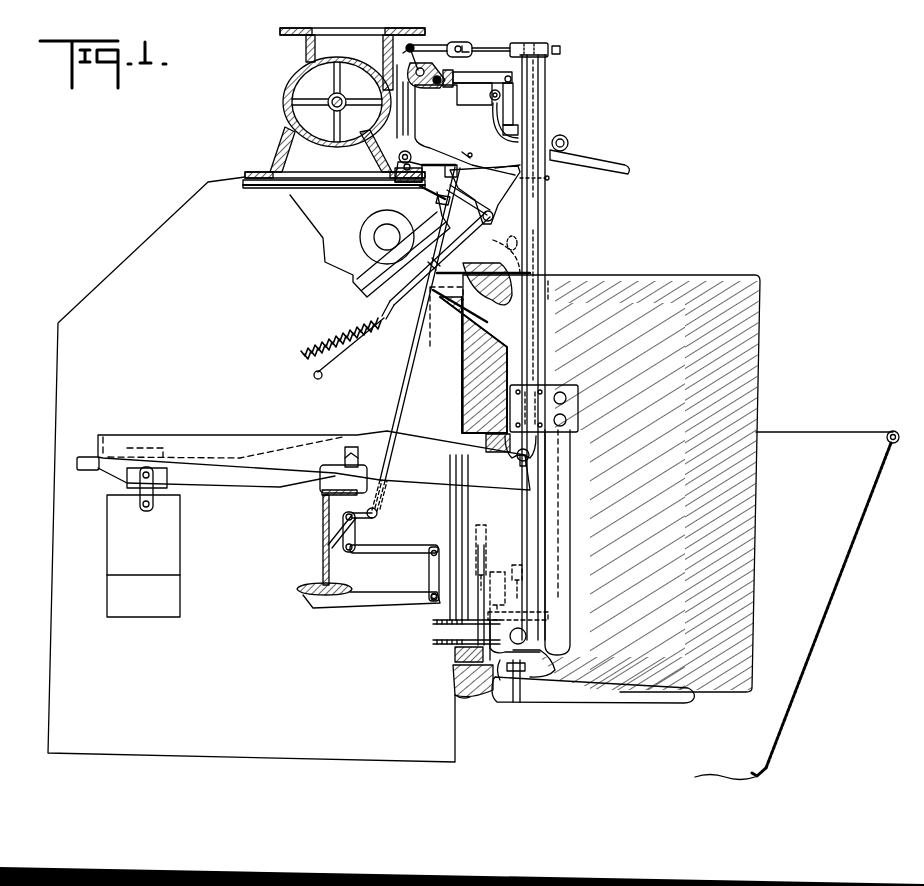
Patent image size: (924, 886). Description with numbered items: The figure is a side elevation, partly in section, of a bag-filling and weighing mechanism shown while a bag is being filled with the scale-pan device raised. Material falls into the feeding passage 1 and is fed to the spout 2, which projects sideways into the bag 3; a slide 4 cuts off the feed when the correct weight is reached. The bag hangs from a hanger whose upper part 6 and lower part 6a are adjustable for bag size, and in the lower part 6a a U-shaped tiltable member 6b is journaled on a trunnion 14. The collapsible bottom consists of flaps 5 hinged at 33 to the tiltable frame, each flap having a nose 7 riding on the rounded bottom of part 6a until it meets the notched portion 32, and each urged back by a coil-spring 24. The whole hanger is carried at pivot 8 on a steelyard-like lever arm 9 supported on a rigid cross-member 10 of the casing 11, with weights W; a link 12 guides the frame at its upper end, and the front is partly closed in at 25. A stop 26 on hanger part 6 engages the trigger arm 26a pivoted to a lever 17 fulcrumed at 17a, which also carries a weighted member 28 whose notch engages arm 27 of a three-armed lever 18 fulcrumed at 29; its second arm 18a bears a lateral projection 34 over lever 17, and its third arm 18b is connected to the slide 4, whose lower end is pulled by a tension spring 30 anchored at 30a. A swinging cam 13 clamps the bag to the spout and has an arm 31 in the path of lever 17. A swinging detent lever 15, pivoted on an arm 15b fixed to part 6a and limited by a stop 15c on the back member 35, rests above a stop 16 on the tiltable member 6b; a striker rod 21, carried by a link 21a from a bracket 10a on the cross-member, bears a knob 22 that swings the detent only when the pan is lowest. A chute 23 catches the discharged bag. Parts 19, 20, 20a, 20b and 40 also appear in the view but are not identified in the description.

The feeding passage 1 is at (336, 30).
The spout 2 is at (558, 300).
The bag 3 is at (760, 324).
The slide 4 is at (441, 245).
The flaps 5 is at (608, 700).
The upper part of hanger 6 is at (549, 213).
The lower part of hanger 6a is at (565, 540).
The tiltable member 6b is at (440, 634).
The stop or nose 7 is at (540, 675).
The pivotal point 8 is at (521, 462).
The lever arm 9 is at (218, 438).
The cross-member 10 is at (323, 547).
The bracket 10a is at (372, 603).
The casing 11 is at (63, 373).
The link 12 is at (497, 45).
The swinging cam 13 is at (492, 288).
The pivot pin or trunnion 14 is at (528, 636).
The swinging detent lever 15 is at (503, 592).
The arm 15b is at (530, 617).
The stop 15c is at (514, 565).
The stop 16 is at (455, 652).
The lever 17 is at (604, 165).
The fulcrum 17a is at (438, 90).
The three-armed lever 18 is at (398, 152).
The second arm 18a is at (478, 170).
The third arm 18b is at (500, 185).
The connecting rod 19 is at (410, 381).
The link 20 is at (357, 537).
The link pin 20a is at (383, 505).
The link bar 20b is at (340, 517).
The striker rod 21 is at (416, 545).
The link 21a is at (429, 568).
The striker knob 22 is at (485, 552).
The chute 23 is at (748, 773).
The coil-spring 24 is at (453, 673).
The front closure 25 is at (852, 543).
The stop 26 is at (520, 126).
The trigger arm 26a is at (512, 103).
The arm 27 is at (410, 126).
The weighted member 28 is at (418, 66).
The fulcrum 29 is at (420, 178).
The tension spring 30 is at (360, 338).
The spring anchorage 30a is at (308, 389).
The arm 31 is at (552, 186).
The notched portion 32 is at (512, 700).
The hinge 33 is at (455, 695).
The lateral projection 34 is at (568, 140).
The back member 35 is at (460, 437).
The frame member 40 is at (445, 195).
The weights W is at (180, 545).